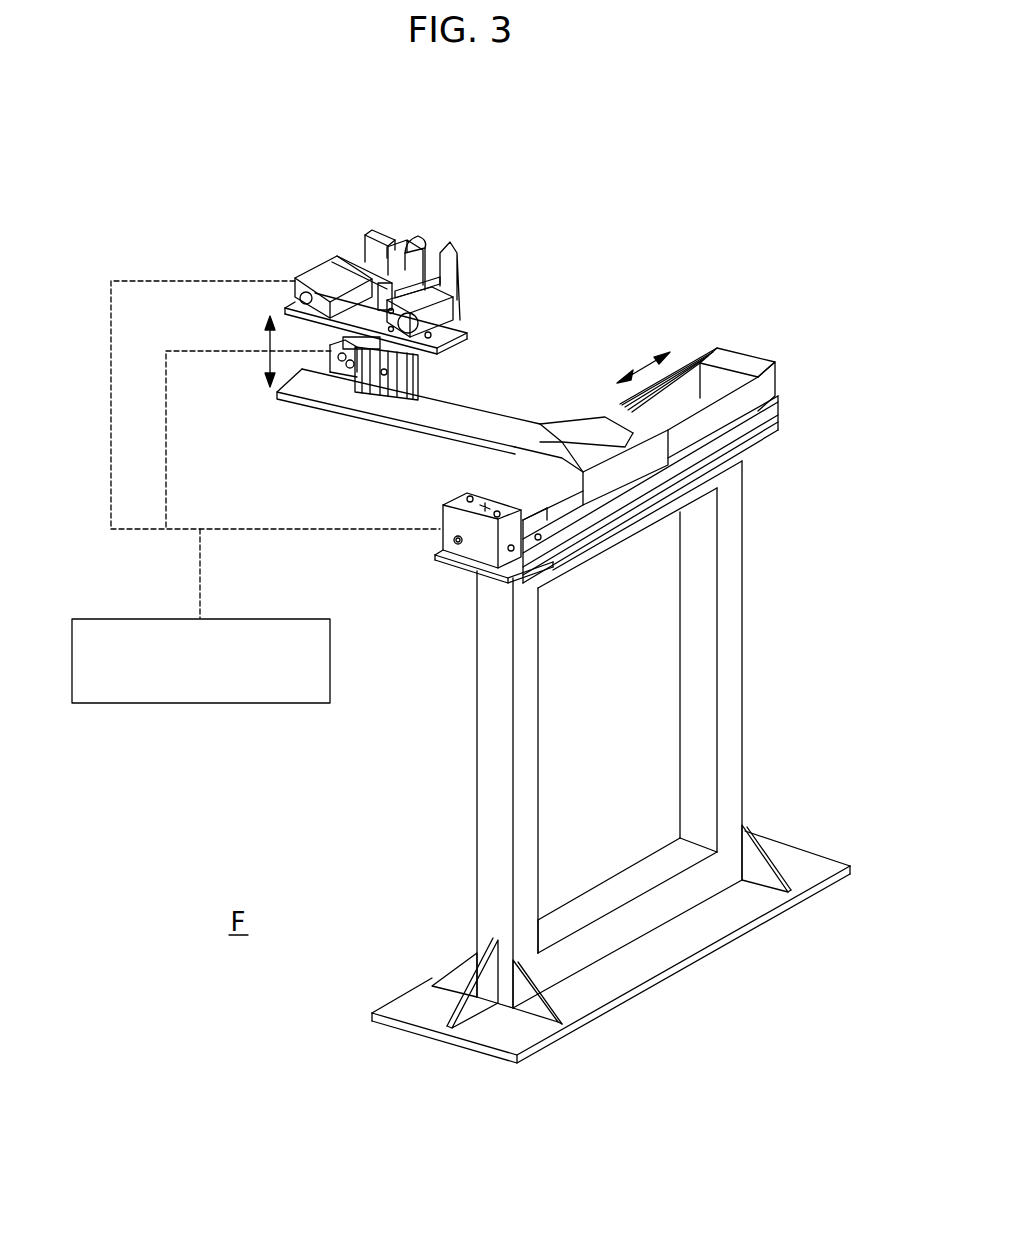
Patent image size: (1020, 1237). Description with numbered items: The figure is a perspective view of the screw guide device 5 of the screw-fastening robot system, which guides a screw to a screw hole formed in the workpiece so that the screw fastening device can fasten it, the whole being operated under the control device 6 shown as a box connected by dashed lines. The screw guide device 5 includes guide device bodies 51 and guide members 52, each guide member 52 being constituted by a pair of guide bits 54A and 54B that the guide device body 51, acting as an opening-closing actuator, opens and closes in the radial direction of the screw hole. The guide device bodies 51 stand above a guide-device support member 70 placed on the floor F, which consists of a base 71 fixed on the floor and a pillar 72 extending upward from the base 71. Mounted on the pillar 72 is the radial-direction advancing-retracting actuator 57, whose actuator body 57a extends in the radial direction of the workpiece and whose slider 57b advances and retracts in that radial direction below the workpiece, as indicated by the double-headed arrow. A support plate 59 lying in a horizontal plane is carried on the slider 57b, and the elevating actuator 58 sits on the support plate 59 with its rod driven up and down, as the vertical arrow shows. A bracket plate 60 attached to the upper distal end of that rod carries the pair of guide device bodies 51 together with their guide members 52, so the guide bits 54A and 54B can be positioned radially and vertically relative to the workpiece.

The screw guide device 5 is at (667, 278).
The control device 6 is at (142, 618).
The guide device body 51 is at (322, 266).
The guide member 52 is at (392, 228).
The guide bit 54A is at (427, 243).
The guide bit 54B is at (453, 245).
The radial-direction advancing-retracting actuator 57 is at (682, 373).
The actuator body 57a is at (468, 485).
The slider 57b is at (503, 467).
The elevating actuator 58 is at (338, 368).
The support plate 59 is at (530, 392).
The bracket plate 60 is at (292, 307).
The guide-device support member 70 is at (745, 632).
The base 71 is at (793, 847).
The pillar 72 is at (748, 712).